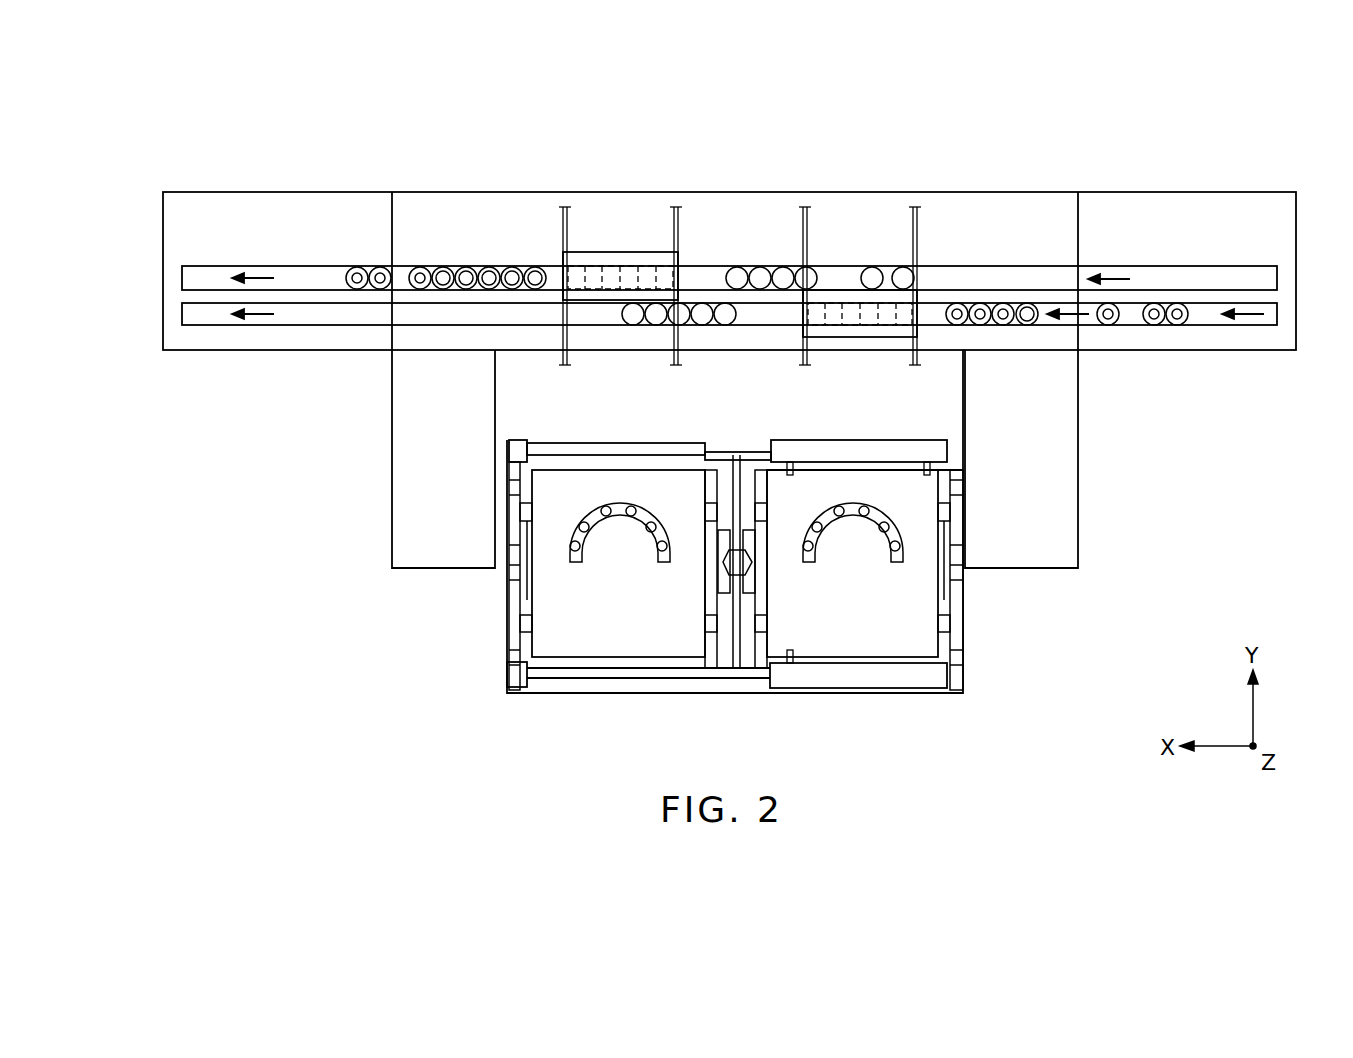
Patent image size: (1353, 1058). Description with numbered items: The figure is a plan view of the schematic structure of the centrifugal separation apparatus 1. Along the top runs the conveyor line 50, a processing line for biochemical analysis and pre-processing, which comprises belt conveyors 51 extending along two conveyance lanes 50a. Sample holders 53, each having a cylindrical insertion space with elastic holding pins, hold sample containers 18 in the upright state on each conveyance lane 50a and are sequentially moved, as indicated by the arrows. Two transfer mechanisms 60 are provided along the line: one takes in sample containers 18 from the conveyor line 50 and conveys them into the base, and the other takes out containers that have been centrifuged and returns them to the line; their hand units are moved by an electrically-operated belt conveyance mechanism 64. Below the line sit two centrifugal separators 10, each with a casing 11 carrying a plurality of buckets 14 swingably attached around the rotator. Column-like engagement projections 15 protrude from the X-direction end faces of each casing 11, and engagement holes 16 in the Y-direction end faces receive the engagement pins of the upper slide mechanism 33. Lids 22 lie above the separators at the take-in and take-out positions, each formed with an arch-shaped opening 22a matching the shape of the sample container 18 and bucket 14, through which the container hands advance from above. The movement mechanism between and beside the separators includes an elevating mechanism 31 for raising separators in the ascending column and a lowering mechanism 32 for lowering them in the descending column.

The centrifugal separation apparatus 1 is at (958, 79).
The centrifugal separator 10 is at (648, 478).
The casing 11 is at (684, 465).
The bucket 14 is at (651, 530).
The engagement projection 15 is at (520, 512).
The engagement hole 16 is at (945, 471).
The sample container 18 is at (357, 266).
The lid 22 is at (562, 490).
The take-in opening / take-out opening 22a is at (656, 524).
The elevating mechanism 31 is at (742, 530).
The lowering mechanism 32 is at (520, 598).
The upper slide mechanism 33 is at (897, 440).
The conveyor line 50 is at (1197, 205).
The conveyance lane 50a is at (1155, 274).
The belt conveyor 51 is at (1070, 305).
The sample holder 53 is at (477, 266).
The transfer mechanism 60 is at (631, 252).
The belt conveyance mechanism 64 is at (920, 222).